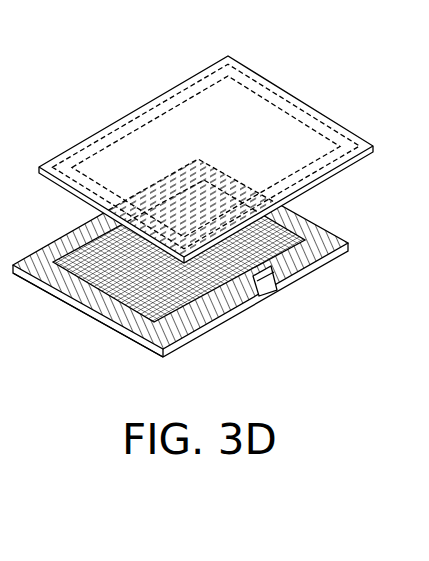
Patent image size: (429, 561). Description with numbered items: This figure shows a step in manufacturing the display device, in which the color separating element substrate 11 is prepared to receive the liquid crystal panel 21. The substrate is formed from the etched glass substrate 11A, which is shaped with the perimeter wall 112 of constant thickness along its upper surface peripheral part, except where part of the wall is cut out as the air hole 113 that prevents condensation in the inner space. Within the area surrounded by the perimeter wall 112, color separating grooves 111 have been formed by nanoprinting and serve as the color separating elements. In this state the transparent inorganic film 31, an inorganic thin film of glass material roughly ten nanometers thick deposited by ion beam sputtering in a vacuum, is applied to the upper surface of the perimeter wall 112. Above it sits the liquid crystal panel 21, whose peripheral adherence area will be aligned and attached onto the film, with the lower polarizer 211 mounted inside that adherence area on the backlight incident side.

The color separating element substrate 11 is at (190, 275).
The glass substrate 11A is at (115, 330).
The color separation grooves 111 is at (191, 254).
The perimeter wall 112 is at (222, 324).
The air hole 113 is at (259, 293).
The liquid crystal panel 21 is at (206, 159).
The lower polarizer 211 is at (276, 79).
The transparent inorganic film 31 is at (318, 255).